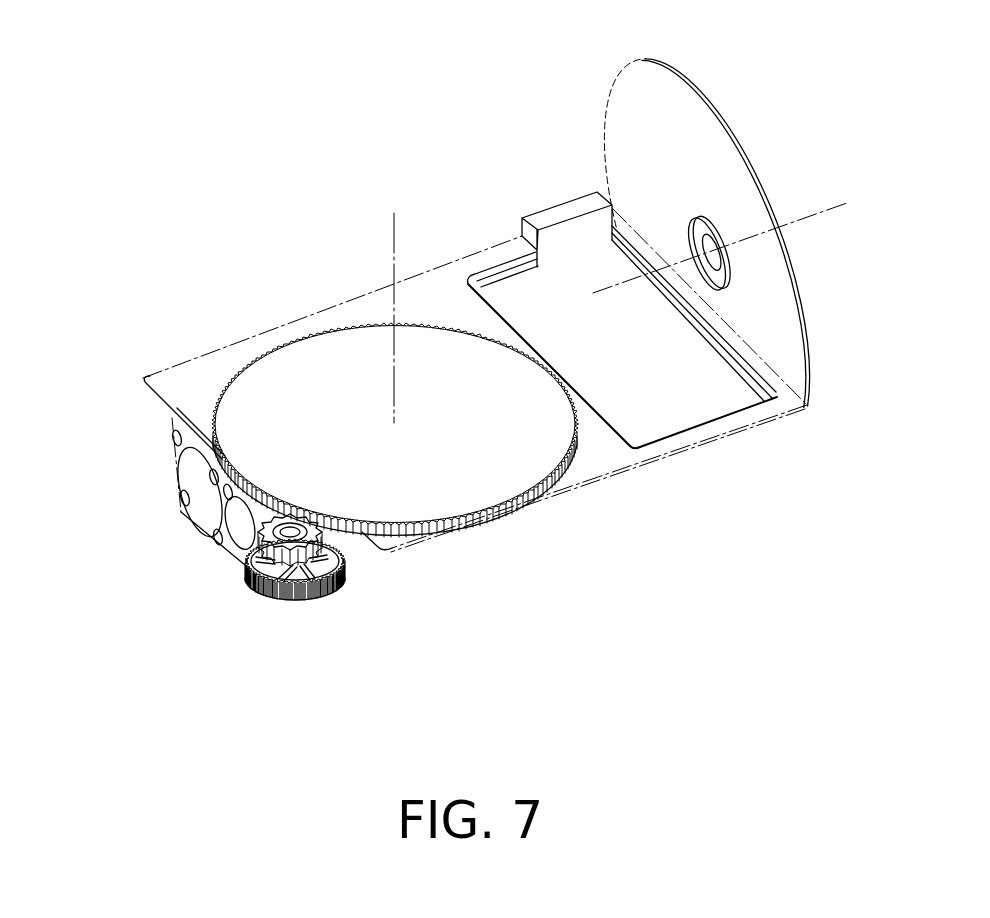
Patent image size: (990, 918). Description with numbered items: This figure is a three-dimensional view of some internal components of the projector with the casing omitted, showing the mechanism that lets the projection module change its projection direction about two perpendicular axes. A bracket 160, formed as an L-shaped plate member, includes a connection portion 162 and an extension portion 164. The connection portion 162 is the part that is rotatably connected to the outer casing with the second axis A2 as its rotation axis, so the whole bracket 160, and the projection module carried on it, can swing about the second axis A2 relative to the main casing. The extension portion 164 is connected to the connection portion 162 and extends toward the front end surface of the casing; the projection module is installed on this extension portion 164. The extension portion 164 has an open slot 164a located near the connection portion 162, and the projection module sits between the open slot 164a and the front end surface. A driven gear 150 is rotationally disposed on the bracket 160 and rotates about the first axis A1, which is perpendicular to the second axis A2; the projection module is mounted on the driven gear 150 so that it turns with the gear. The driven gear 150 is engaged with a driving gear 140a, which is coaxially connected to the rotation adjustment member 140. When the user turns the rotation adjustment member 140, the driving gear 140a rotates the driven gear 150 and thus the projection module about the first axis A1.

The rotation adjustment member 140 is at (321, 597).
The driving gear 140a is at (337, 573).
The driven gear 150 is at (462, 493).
The bracket 160 is at (884, 357).
The connection portion 162 is at (788, 364).
The extension portion 164 is at (672, 380).
The open slot 164a is at (683, 432).
The first axis A1 is at (393, 243).
The second axis A2 is at (821, 212).